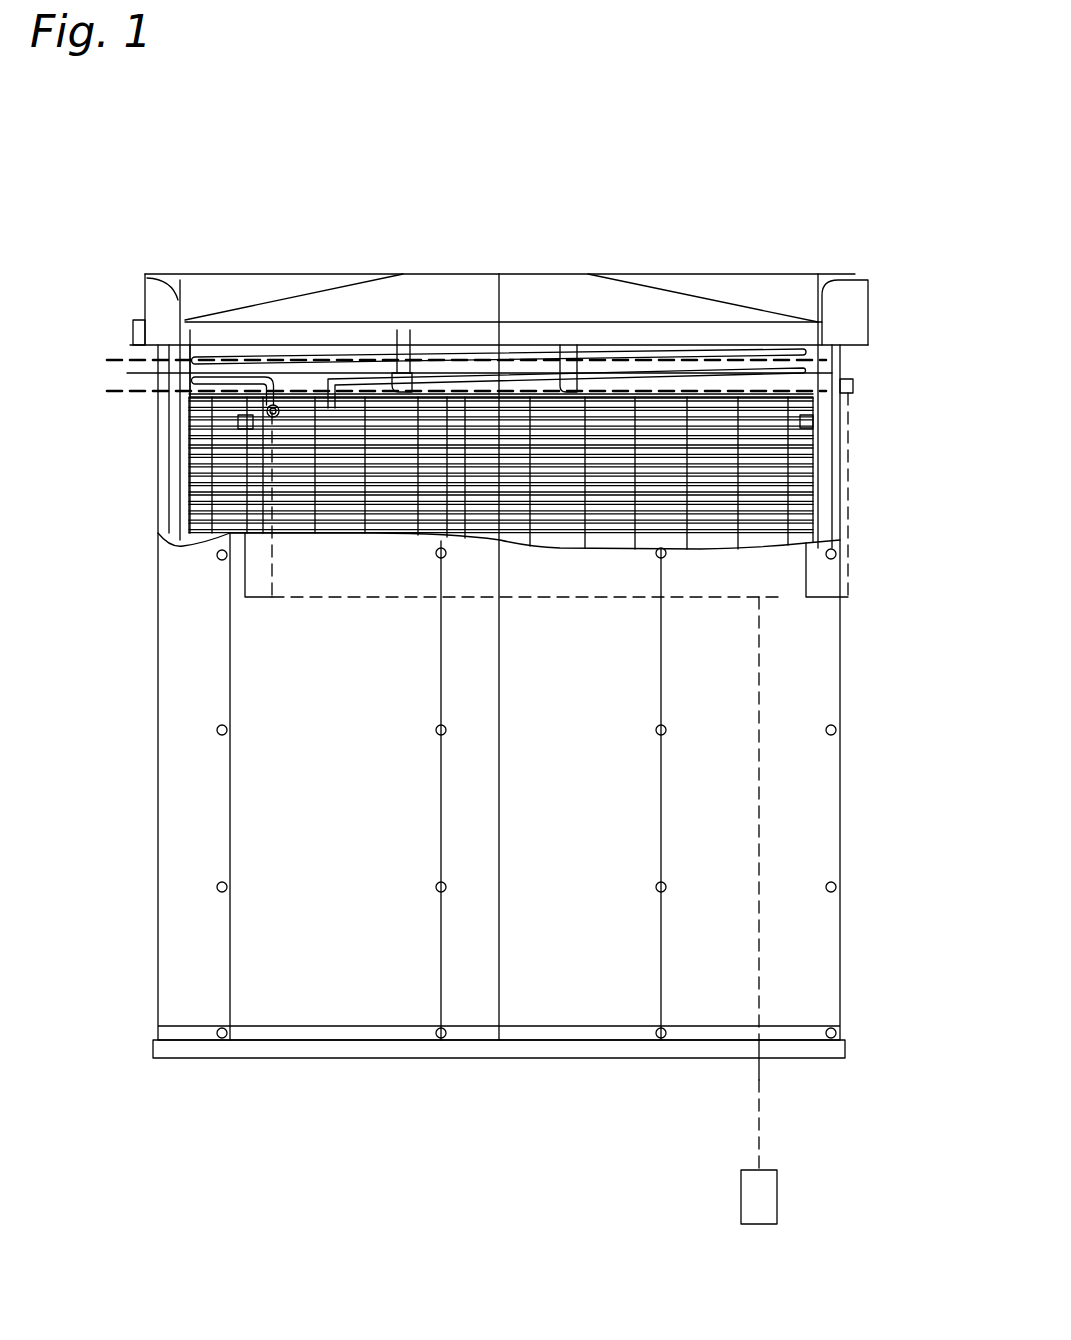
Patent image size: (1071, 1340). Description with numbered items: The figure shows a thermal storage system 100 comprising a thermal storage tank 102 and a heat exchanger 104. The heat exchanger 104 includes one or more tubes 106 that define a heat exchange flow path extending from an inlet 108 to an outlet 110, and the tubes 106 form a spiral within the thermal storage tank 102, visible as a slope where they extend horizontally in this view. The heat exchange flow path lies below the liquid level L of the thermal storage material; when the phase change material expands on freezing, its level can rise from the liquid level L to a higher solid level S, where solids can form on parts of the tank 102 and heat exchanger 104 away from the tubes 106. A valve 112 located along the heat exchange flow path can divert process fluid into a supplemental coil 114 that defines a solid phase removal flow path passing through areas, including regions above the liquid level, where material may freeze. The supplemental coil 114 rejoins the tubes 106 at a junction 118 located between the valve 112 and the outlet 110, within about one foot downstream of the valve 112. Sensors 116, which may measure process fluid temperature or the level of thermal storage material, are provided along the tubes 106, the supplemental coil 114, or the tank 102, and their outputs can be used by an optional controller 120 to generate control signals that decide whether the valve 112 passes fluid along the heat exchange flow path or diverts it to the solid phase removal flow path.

The thermal storage system 100 is at (683, 193).
The thermal storage tank 102 is at (820, 658).
The heat exchanger 104 is at (800, 393).
The tubes 106 is at (753, 407).
The inlet 108 is at (455, 383).
The outlet 110 is at (193, 383).
The valve 112 is at (266, 405).
The supplemental coil 114 is at (658, 350).
The sensors 116 is at (237, 425).
The junction 118 is at (332, 375).
The controller 120 is at (768, 1224).
The solid level S is at (454, 363).
The liquid level L is at (455, 393).